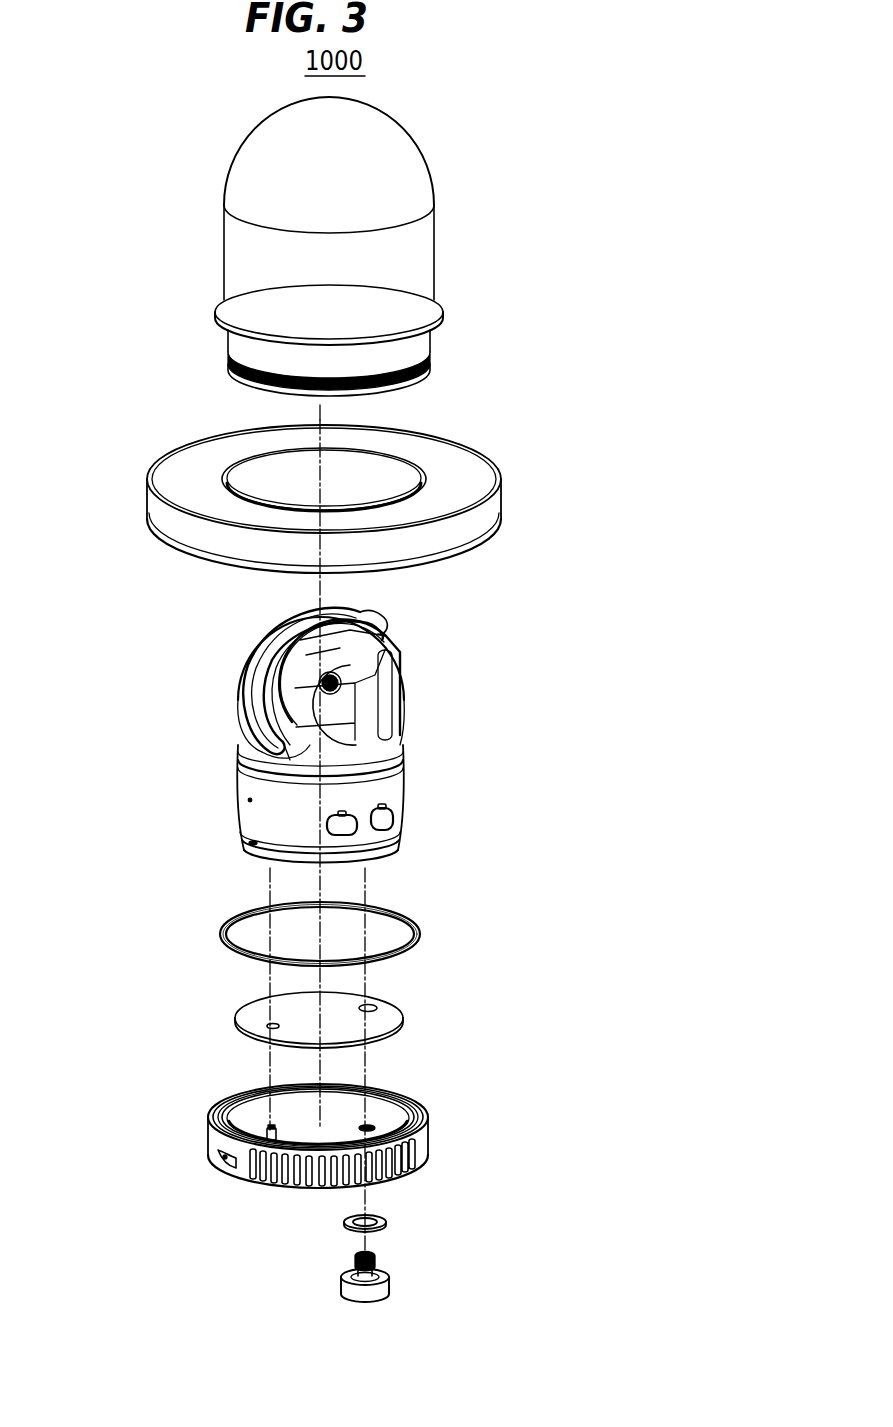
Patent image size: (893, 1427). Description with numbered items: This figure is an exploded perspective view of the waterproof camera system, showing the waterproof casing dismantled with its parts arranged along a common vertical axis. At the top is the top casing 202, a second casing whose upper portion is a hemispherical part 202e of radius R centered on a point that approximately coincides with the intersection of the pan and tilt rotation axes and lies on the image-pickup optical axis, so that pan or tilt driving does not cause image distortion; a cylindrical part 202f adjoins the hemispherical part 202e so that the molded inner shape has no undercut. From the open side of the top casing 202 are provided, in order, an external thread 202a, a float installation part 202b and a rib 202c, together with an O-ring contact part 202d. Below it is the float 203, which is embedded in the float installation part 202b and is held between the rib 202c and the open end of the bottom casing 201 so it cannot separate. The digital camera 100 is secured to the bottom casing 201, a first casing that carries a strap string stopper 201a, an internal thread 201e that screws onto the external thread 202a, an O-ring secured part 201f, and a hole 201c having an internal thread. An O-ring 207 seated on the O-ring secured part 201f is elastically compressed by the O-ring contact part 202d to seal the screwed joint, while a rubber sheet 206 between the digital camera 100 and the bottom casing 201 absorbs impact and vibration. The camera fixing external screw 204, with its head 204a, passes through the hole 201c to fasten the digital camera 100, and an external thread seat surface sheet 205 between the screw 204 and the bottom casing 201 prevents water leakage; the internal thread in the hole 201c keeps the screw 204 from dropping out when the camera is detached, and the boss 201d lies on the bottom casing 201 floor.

The digital camera 100 is at (242, 670).
The top casing 202 is at (255, 165).
The external thread 202a is at (430, 362).
The float installation part 202b is at (415, 345).
The rib 202c is at (437, 303).
The O-ring contact part 202d is at (403, 390).
The hemispherical part 202e is at (432, 152).
The cylindrical part 202f is at (413, 272).
The float 203 is at (170, 472).
The bottom casing 201 is at (215, 1135).
The strap string stopper 201a is at (215, 1160).
The hole 201c is at (428, 1118).
The base boss 201d is at (302, 1110).
The internal thread 201e is at (232, 1097).
The O-ring secured part 201f is at (215, 1117).
The camera fixing external screw 204 is at (388, 1290).
The fixing member head 204a is at (378, 1258).
The external thread seat surface sheet 205 is at (388, 1222).
The rubber sheet 206 is at (242, 1017).
The O-ring 207 is at (223, 930).